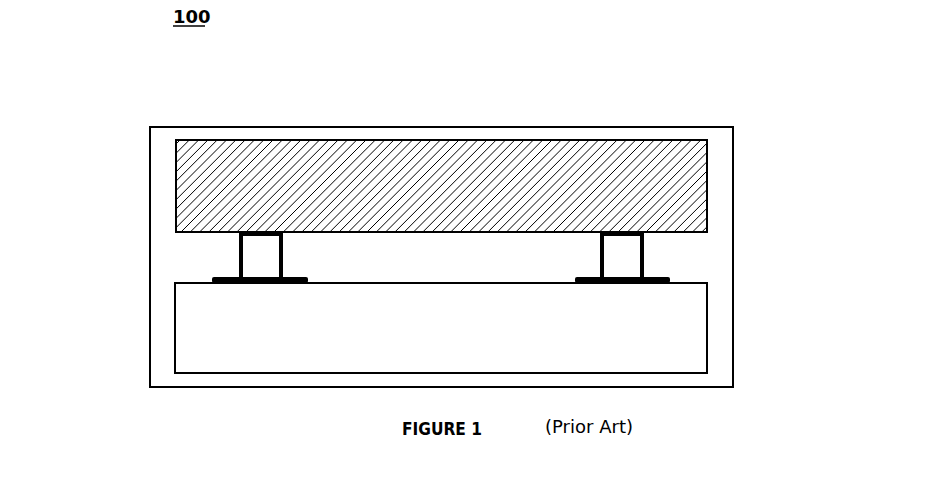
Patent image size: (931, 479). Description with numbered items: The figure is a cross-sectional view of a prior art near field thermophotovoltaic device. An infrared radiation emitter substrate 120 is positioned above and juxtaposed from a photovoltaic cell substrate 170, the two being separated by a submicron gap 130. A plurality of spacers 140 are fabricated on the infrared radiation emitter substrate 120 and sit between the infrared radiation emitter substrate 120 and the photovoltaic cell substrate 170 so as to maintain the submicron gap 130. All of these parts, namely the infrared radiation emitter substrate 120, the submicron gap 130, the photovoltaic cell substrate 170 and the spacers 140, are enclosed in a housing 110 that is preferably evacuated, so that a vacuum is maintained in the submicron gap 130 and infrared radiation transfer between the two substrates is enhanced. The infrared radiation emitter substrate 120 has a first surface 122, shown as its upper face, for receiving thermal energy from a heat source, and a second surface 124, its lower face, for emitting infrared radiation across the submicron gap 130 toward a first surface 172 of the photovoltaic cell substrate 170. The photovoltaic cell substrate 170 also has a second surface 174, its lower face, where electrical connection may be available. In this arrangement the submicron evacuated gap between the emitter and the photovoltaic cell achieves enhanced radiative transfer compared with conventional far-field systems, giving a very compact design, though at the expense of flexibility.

The housing 110 is at (278, 115).
The infrared radiation emitter substrate 120 is at (162, 153).
The first surface 122 is at (682, 140).
The second surface 124 is at (680, 232).
The submicron gap 130 is at (190, 243).
The spacers 140 is at (227, 269).
The photovoltaic cell substrate 170 is at (163, 321).
The first surface 172 is at (688, 283).
The second surface 174 is at (680, 373).